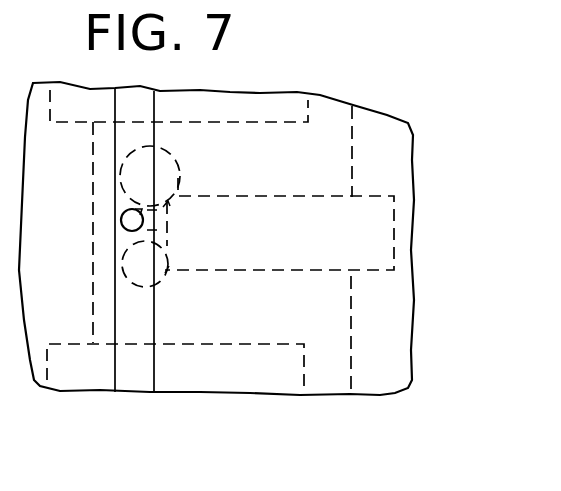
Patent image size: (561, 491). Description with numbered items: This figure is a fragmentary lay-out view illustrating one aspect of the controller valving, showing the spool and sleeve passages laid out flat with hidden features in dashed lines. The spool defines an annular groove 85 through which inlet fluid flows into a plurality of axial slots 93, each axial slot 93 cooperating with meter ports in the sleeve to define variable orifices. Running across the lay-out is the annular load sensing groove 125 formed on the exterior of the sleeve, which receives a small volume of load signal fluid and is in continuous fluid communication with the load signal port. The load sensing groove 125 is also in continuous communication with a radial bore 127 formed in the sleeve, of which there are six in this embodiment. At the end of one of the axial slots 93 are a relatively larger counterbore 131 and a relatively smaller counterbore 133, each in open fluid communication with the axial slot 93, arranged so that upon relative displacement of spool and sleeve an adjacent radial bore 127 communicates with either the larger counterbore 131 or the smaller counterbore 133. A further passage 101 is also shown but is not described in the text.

The annular groove 85 is at (380, 138).
The axial slot 93 is at (312, 222).
The slot 101 is at (227, 113).
The load sensing groove 125 is at (133, 368).
The radial bore 127 is at (121, 221).
The larger counterbore 131 is at (170, 167).
The smaller counterbore 133 is at (158, 291).